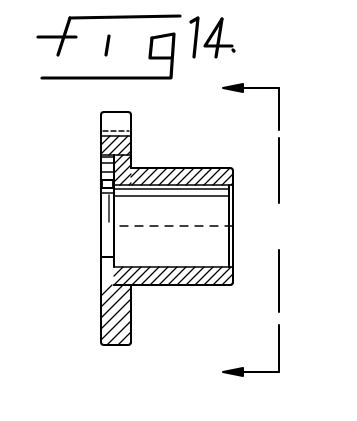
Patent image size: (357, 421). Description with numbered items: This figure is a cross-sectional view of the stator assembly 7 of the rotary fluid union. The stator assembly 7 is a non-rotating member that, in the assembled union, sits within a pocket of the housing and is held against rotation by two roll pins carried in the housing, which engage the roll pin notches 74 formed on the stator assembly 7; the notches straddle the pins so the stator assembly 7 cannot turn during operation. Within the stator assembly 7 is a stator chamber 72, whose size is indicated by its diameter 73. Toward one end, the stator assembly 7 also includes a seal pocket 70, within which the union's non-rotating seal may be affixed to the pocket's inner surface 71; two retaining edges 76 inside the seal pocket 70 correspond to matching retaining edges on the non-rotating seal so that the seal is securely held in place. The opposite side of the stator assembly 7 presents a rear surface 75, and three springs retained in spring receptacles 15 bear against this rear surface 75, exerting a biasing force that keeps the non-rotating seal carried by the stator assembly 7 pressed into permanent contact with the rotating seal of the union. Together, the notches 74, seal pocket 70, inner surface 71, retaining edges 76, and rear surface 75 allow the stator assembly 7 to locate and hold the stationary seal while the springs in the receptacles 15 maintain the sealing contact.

The stator assembly 7 is at (206, 169).
The spring receptacles 15 is at (259, 230).
The seal pocket 70 is at (106, 296).
The inner surface 71 is at (101, 179).
The stator chamber 72 is at (147, 218).
The diameter 73 is at (193, 197).
The roll pin notches 74 is at (108, 131).
The rear surface 75 is at (131, 318).
The retaining edges 76 is at (102, 225).